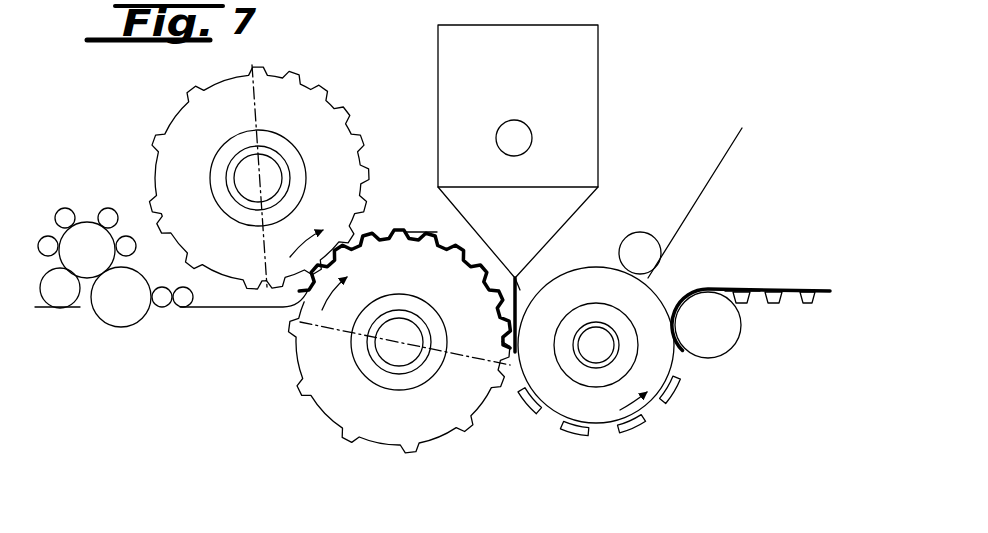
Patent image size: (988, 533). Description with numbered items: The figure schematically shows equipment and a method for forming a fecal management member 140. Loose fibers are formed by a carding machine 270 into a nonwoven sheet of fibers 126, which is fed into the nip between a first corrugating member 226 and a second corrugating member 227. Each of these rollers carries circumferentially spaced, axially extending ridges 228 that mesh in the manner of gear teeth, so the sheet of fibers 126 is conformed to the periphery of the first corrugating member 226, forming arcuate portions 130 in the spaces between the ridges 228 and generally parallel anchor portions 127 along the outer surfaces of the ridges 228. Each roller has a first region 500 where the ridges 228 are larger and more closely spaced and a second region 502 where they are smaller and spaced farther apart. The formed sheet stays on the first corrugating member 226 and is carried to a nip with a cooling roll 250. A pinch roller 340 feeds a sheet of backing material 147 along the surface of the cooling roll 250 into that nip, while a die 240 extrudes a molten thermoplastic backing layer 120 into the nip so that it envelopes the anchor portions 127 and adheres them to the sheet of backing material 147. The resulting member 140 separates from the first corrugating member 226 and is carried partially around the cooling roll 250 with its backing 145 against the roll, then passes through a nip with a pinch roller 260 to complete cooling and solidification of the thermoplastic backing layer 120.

The thermoplastic backing layer 120 is at (520, 290).
The sheet of fibers 126 is at (200, 312).
The anchor portions 127 is at (437, 231).
The arcuate portions 130 is at (480, 245).
The fecal management member 140 is at (775, 285).
The backing 145 is at (743, 285).
The sheet of backing material 147 is at (718, 167).
The first corrugating member 226 is at (350, 400).
The second corrugating member 227 is at (168, 128).
The ridges 228 is at (322, 93).
The die 240 is at (583, 115).
The cooling roll 250 is at (580, 410).
The pinch roller 260 is at (723, 327).
The carding machine 270 is at (88, 233).
The pinch roller 340 is at (637, 250).
The first region 500 is at (320, 127).
The second region 502 is at (230, 254).